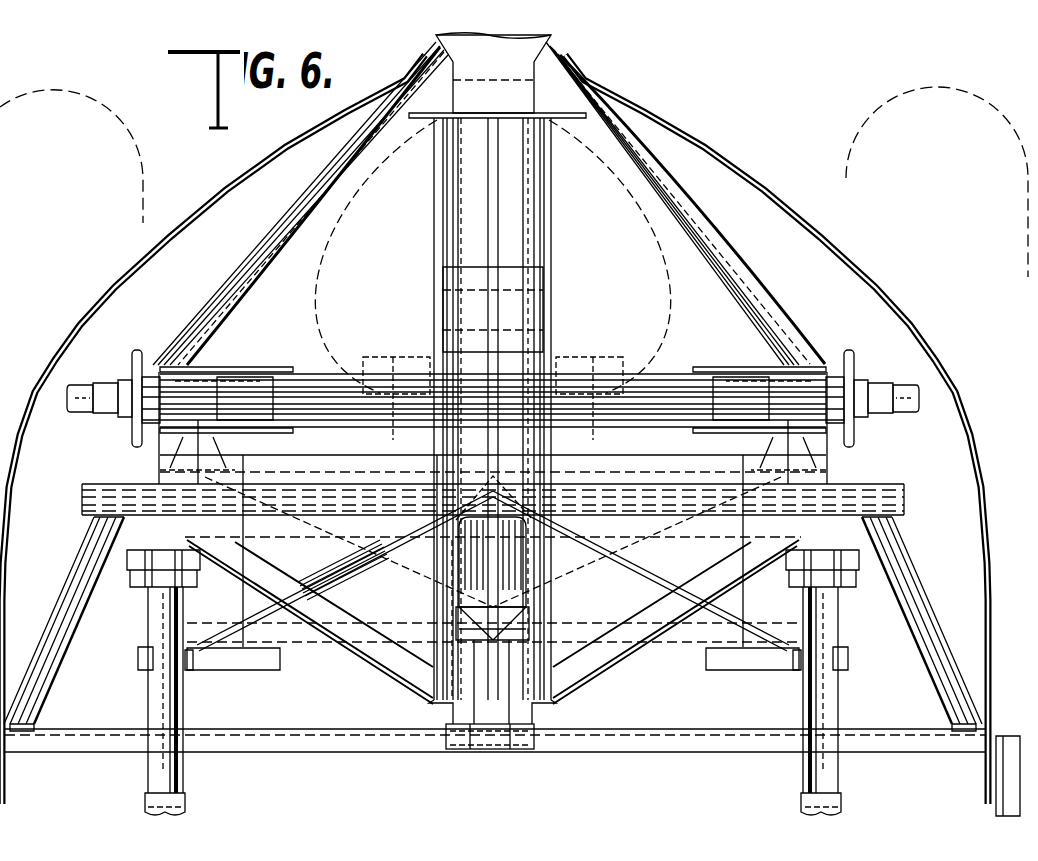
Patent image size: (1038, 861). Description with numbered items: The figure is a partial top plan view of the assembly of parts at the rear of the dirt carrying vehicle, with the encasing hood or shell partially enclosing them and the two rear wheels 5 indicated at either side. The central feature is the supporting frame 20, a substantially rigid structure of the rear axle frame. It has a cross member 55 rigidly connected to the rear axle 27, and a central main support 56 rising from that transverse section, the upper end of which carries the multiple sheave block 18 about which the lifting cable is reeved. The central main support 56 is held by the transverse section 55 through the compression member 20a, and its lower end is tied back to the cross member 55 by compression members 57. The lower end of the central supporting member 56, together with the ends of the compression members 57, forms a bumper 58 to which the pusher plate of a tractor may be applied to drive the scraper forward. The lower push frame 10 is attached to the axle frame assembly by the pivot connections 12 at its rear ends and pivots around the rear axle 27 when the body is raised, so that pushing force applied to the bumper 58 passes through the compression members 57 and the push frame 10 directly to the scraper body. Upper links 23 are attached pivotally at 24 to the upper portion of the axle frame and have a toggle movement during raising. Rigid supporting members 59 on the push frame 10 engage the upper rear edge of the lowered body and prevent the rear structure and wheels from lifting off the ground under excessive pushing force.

The rear wheels 5 is at (113, 178).
The push frame 10 is at (666, 637).
The pivot connections 12 is at (227, 383).
The multiple sheave block 18 is at (503, 717).
The supporting frame member 20 is at (536, 442).
The compression member 20a is at (343, 543).
The links 23 is at (157, 700).
The pivot 24 is at (128, 568).
The rear axle 27 is at (83, 390).
The cross member 55 is at (97, 492).
The central main support 56 is at (533, 365).
The compression members 57 is at (318, 178).
The bumper 58 is at (478, 46).
The rigid supporting members 59 is at (77, 586).